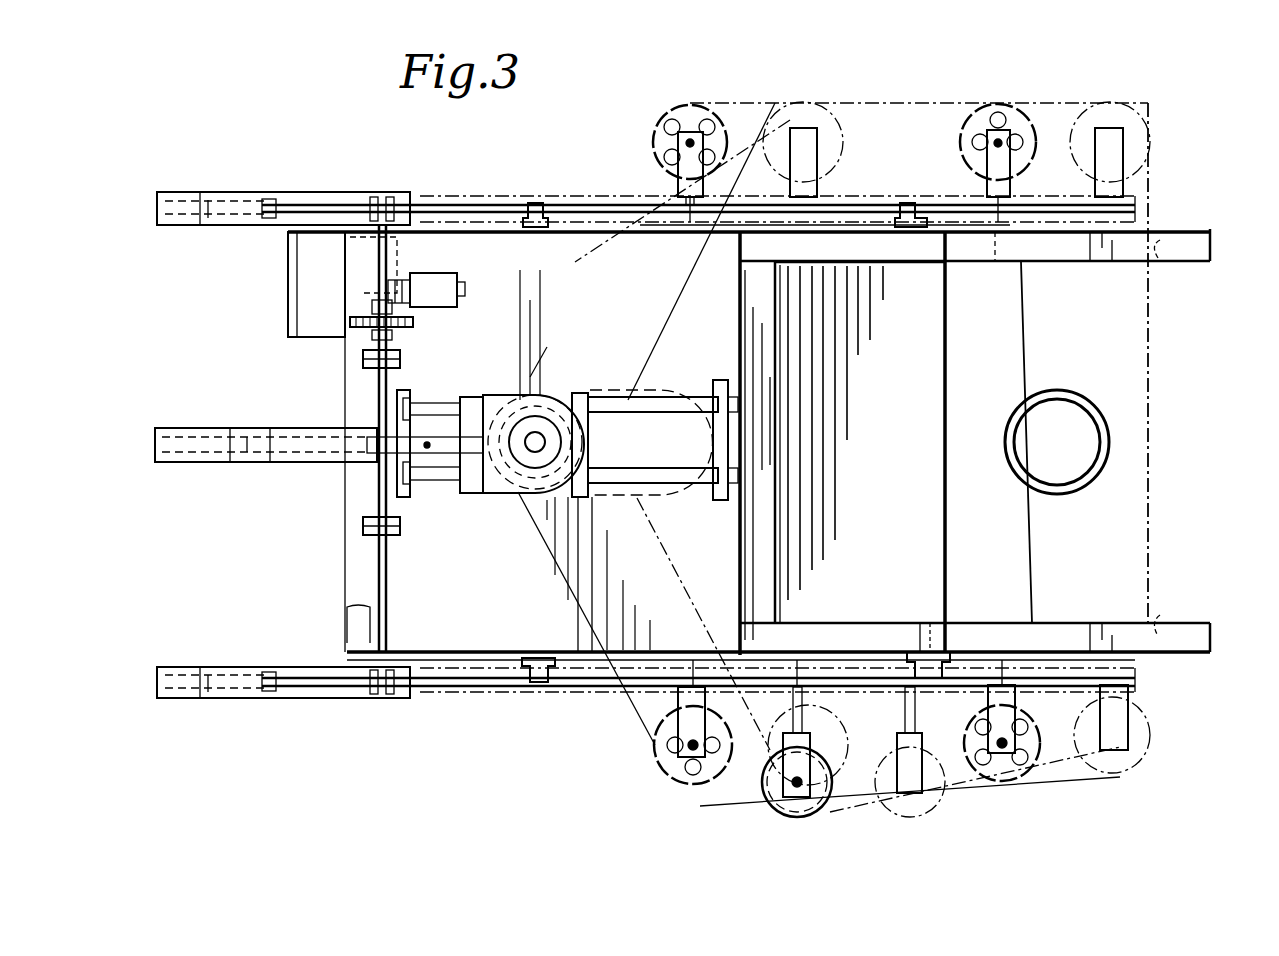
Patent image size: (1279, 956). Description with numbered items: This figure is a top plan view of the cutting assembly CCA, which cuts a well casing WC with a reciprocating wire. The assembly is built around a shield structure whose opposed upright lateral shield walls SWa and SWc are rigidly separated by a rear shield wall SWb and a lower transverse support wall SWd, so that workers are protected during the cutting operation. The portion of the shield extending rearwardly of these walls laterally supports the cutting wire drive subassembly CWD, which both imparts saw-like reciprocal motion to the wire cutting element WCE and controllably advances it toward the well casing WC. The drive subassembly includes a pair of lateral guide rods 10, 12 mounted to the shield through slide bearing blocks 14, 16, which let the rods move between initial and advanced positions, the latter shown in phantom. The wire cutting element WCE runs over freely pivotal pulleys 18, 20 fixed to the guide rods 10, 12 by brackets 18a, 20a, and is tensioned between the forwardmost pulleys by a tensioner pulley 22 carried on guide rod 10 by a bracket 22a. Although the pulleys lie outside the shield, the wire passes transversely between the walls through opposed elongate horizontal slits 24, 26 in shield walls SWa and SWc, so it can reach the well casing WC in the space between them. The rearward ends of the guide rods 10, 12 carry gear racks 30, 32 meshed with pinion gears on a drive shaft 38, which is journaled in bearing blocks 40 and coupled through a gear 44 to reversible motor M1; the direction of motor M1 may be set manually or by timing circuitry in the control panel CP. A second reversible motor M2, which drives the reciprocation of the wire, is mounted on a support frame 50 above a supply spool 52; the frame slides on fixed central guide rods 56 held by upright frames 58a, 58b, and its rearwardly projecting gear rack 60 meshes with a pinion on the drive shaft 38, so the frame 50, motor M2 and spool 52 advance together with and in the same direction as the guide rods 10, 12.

The lateral guide rod 10 is at (452, 690).
The lateral guide rod 12 is at (435, 203).
The slide bearing block 14 is at (533, 678).
The slide bearing block 16 is at (537, 213).
The pulley 18 is at (673, 772).
The bracket 18a is at (687, 707).
The pulley 20 is at (687, 107).
The bracket 20a is at (678, 150).
The tensioner pulley 22 is at (810, 803).
The bracket 22a is at (827, 723).
The horizontal slit 24 is at (1163, 613).
The horizontal slit 26 is at (1153, 265).
The gear rack 30 is at (175, 668).
The gear rack 32 is at (187, 197).
The drive shaft 38 is at (387, 610).
The bearing block 40 is at (363, 360).
The gear 44 is at (350, 320).
The support frame 50 is at (490, 493).
The supply spool 52 is at (580, 498).
The central guide rod 56 is at (617, 455).
The upright frame 58a is at (413, 490).
The upright frame 58b is at (715, 382).
The gear rack 60 is at (190, 460).
The control panel CP is at (333, 282).
The reversible motor M1 is at (440, 300).
The reversible motor M2 is at (538, 423).
The well casing WC is at (1047, 392).
The wire cutting element WCE is at (1152, 358).
The lateral shield wall SWa is at (1180, 647).
The rear shield wall SWb is at (763, 547).
The lateral shield wall SWc is at (1182, 233).
The lower transverse support wall SWd is at (848, 603).
The cutting wire drive subassembly CWD is at (327, 498).
The cutting assembly CCA is at (268, 740).